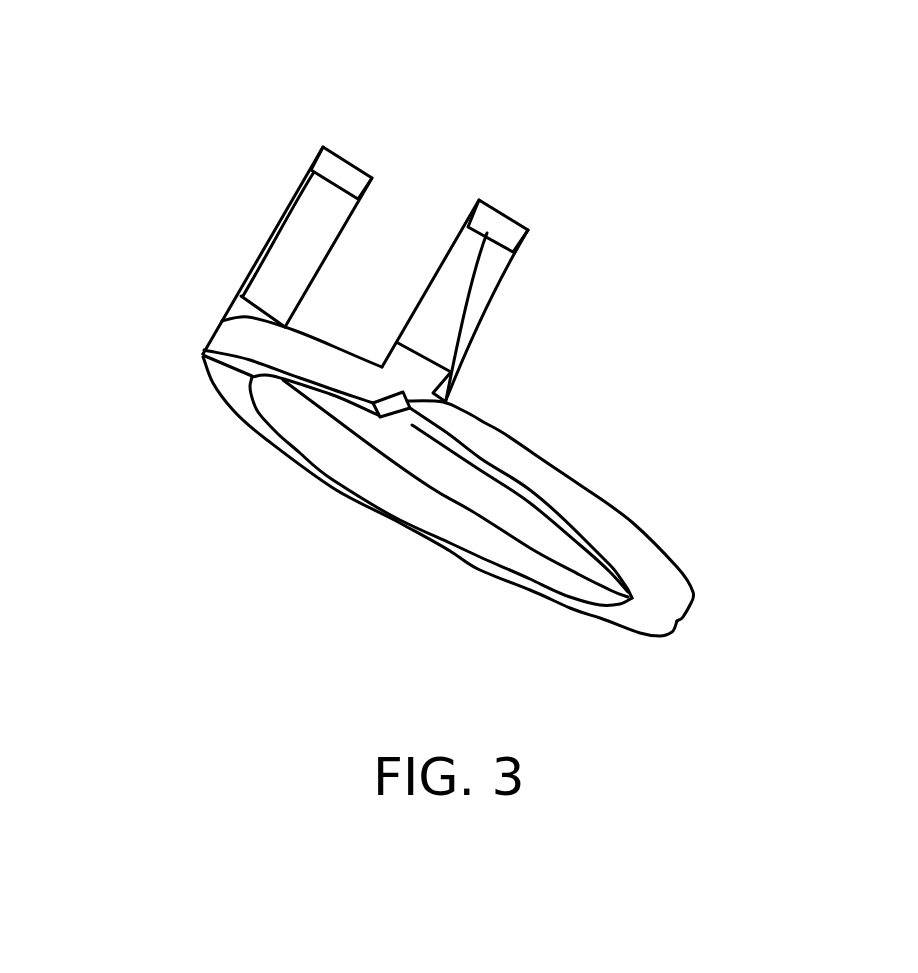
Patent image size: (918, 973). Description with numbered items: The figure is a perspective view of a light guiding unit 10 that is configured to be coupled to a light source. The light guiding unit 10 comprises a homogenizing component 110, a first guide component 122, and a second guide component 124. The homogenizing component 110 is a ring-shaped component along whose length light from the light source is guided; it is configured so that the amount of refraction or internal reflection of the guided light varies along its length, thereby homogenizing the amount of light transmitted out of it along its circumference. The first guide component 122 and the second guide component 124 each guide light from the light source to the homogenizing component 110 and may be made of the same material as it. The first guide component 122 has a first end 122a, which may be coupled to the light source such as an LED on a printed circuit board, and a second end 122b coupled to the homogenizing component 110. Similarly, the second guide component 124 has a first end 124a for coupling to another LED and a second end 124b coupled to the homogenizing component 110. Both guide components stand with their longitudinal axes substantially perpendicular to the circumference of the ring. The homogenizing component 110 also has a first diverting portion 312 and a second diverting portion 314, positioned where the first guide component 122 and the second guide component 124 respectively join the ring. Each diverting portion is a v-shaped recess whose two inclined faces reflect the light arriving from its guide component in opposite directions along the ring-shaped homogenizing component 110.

The light guiding unit 10 is at (131, 97).
The homogenizing component 110 is at (677, 598).
The first guide component 122 is at (482, 293).
The first end 122a is at (512, 237).
The second end 122b is at (428, 356).
The second guide component 124 is at (298, 237).
The first end 124a is at (354, 174).
The second end 124b is at (250, 297).
The first diverting portion 312 is at (432, 400).
The second diverting portion 314 is at (228, 363).